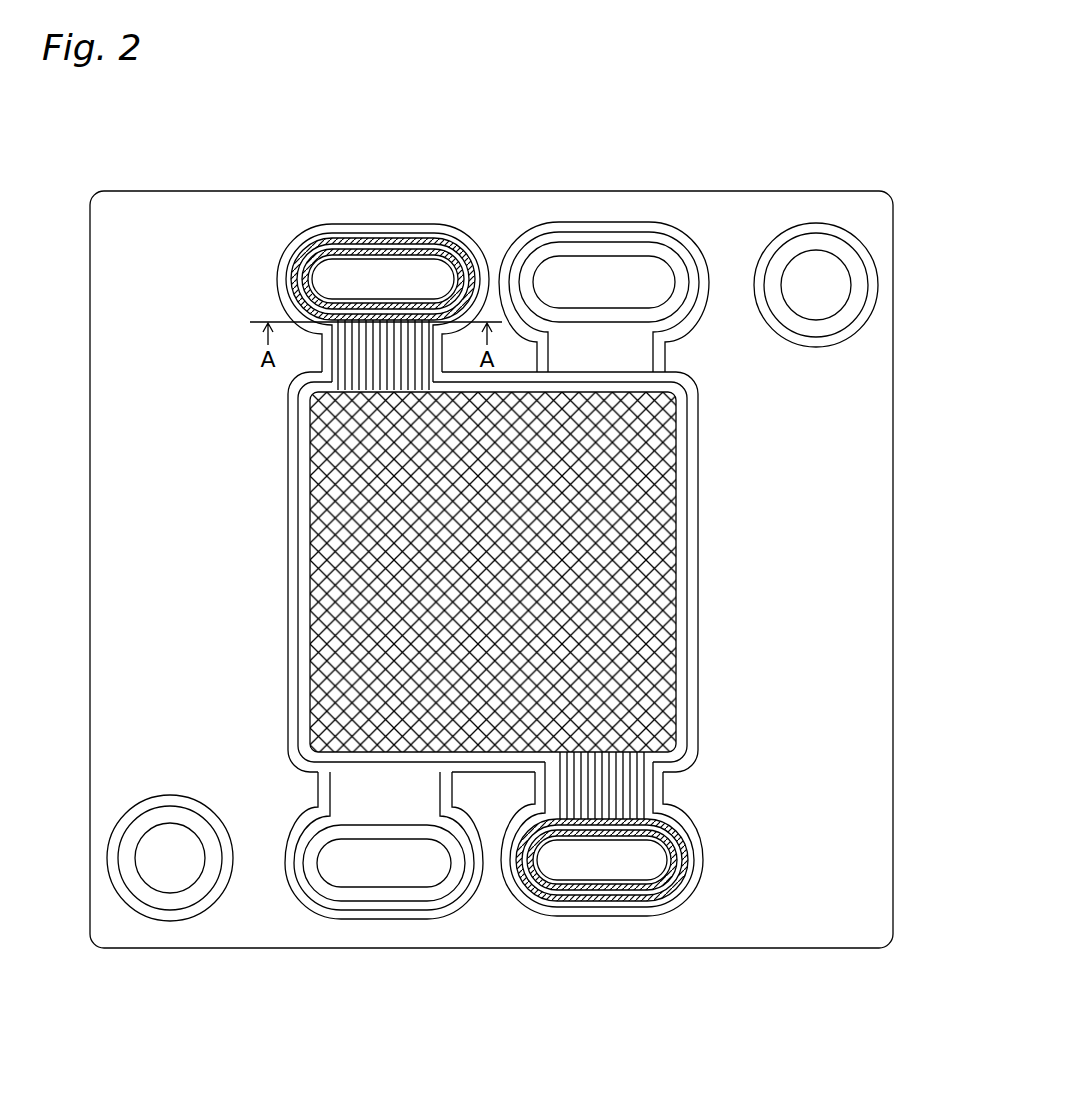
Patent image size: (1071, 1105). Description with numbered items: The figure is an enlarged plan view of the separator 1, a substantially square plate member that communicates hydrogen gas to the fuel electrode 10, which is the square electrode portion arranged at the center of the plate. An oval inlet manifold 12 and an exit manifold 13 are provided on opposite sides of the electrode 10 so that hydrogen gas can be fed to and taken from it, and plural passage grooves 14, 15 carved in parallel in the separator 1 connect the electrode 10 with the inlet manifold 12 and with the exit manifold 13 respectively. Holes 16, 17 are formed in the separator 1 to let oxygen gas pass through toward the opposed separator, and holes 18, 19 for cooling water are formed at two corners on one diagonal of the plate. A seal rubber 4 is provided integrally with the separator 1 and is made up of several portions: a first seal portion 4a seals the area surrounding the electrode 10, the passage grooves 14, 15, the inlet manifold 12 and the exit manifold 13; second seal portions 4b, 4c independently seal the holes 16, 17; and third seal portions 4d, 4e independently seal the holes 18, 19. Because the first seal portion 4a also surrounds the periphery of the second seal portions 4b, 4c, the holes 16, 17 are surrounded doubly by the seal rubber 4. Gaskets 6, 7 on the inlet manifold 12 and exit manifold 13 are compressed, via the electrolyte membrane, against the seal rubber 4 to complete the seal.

The separator 1 is at (118, 315).
The seal rubber 4 is at (278, 672).
The first seal portion 4a is at (690, 578).
The second seal portion 4b is at (607, 243).
The second seal portion 4c is at (427, 900).
The third seal portion 4d is at (857, 325).
The third seal portion 4e is at (112, 862).
The gasket 6 is at (330, 250).
The gasket 7 is at (657, 895).
The fuel electrode 10 is at (335, 572).
The inlet manifold 12 is at (335, 286).
The exit manifold 13 is at (597, 863).
The passage grooves 14 is at (380, 370).
The passage grooves 15 is at (613, 785).
The hole 16 is at (655, 287).
The hole 17 is at (375, 865).
The hole for cooling water 18 is at (822, 277).
The hole for cooling water 19 is at (175, 870).